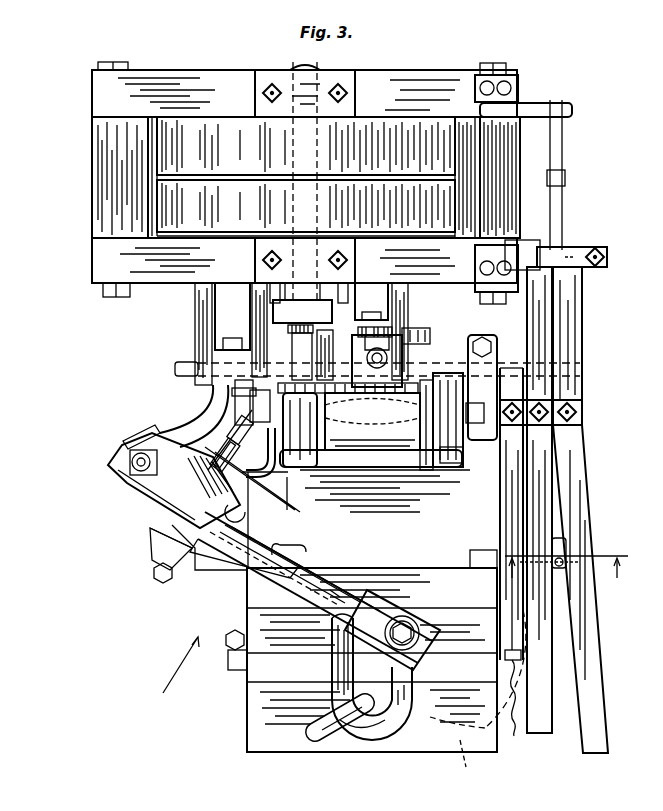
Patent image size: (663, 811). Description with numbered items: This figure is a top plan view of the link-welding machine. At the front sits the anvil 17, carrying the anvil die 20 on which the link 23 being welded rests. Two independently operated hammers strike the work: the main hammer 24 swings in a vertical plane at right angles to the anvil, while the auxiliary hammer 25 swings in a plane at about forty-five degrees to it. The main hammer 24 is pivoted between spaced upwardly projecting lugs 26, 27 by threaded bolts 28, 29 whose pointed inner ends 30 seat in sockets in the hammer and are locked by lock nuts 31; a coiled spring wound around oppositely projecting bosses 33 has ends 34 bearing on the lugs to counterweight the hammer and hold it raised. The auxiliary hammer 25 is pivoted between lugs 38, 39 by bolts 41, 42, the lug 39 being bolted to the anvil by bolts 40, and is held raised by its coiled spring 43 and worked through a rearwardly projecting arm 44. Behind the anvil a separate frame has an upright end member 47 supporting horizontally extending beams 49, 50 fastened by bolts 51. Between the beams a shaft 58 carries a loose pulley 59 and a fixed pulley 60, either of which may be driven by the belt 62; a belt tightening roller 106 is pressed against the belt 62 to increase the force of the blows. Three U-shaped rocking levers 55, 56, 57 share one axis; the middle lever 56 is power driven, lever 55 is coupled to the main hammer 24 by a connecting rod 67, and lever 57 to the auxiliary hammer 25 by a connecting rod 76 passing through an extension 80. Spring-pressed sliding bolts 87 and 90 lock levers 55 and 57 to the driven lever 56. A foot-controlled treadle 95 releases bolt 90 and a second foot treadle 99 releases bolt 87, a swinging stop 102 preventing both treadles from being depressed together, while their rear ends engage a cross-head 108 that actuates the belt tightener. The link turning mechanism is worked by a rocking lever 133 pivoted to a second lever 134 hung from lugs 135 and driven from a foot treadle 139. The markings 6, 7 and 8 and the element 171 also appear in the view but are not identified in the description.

The direction of view 6 is at (177, 674).
The section line 7 is at (330, 590).
The section line 8 is at (564, 578).
The anvil 17 is at (247, 618).
The anvil die 20 is at (408, 600).
The link 23 is at (385, 730).
The main hammer 24 is at (382, 462).
The auxiliary hammer 25 is at (282, 560).
The lug 26 is at (463, 456).
The lug 27 is at (270, 470).
The bolt 28 is at (478, 423).
The bolt 29 is at (258, 405).
The pointed inner end 30 is at (372, 421).
The lock nut 31 is at (445, 378).
The boss 33 is at (426, 380).
The spring end 34 is at (305, 467).
The lug 38 is at (228, 440).
The lug 39 is at (215, 567).
The bolt 40 is at (280, 546).
The bolt 41 is at (240, 410).
The bolt 42 is at (152, 568).
The coiled spring 43 is at (247, 515).
The rearwardly projecting arm 44 is at (175, 497).
The upright end member 47 is at (95, 182).
The horizontally extending beam 49 is at (228, 88).
The horizontally extending beam 50 is at (162, 283).
The bolt 51 is at (110, 62).
The U-shaped rocking lever 55 is at (400, 300).
The U-shaped rocking lever 56 is at (278, 322).
The U-shaped rocking lever 57 is at (198, 318).
The shaft 58 is at (302, 66).
The belt pulley 59 is at (372, 130).
The belt pulley 60 is at (155, 212).
The belt 62 is at (155, 133).
The connecting rod 67 is at (387, 356).
The connecting rod 76 is at (128, 442).
The extension 80 is at (115, 462).
The sliding bolt 87 is at (420, 330).
The sliding bolt 90 is at (176, 368).
The foot-controlled treadle 95 is at (595, 700).
The foot treadle 99 is at (542, 733).
The swinging stop 102 is at (566, 548).
The belt tightening roller 106 is at (505, 172).
The cross-head 108 is at (580, 265).
The rocking lever 133 is at (519, 702).
The second lever 134 is at (232, 652).
The lug 135 is at (235, 670).
The foot treadle 139 is at (478, 699).
The stub pipe 171 is at (300, 710).